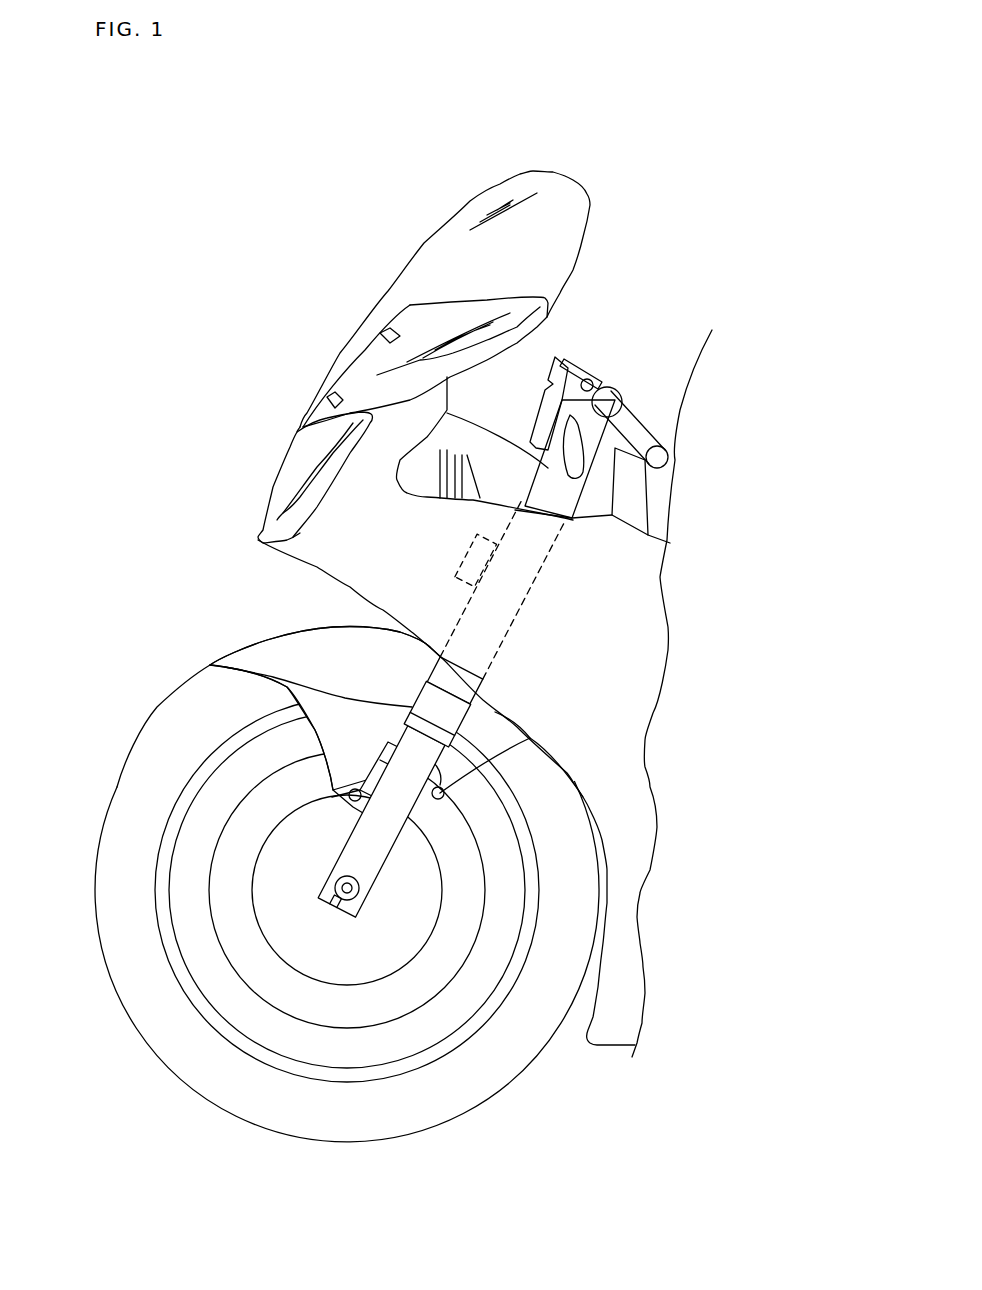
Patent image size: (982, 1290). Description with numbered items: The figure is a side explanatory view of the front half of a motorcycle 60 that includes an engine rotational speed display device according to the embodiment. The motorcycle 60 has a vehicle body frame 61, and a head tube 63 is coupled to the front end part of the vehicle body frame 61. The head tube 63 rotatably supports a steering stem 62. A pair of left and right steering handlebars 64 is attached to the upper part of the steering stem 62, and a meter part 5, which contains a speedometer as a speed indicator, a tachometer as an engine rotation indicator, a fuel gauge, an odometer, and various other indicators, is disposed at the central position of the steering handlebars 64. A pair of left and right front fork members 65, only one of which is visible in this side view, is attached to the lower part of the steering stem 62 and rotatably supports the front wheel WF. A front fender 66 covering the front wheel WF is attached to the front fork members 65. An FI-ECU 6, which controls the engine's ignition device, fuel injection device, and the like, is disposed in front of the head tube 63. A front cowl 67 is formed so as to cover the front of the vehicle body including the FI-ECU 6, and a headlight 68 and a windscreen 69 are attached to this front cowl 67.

The front wheel WF is at (118, 785).
The front fender 66 is at (210, 665).
The head tube 63 is at (520, 610).
The front fork members 65 is at (414, 708).
The FI-ECU 6 is at (463, 556).
The vehicle body frame 61 is at (684, 478).
The motorcycle 60 is at (249, 276).
The windscreen 69 is at (533, 171).
The front cowl 67 is at (296, 434).
The headlight 68 is at (264, 488).
The meter part 5 is at (598, 380).
The steering stem 62 is at (599, 364).
The steering handlebars 64 is at (672, 418).